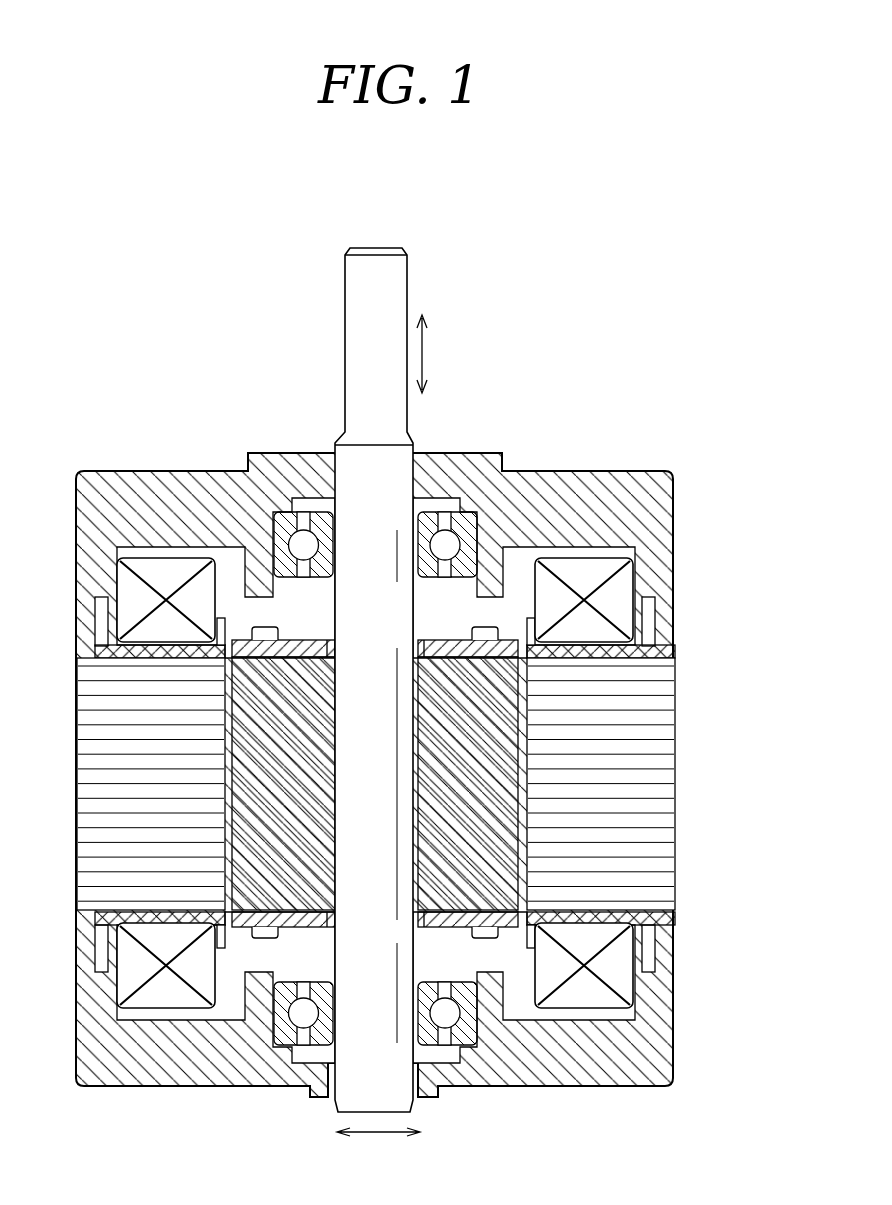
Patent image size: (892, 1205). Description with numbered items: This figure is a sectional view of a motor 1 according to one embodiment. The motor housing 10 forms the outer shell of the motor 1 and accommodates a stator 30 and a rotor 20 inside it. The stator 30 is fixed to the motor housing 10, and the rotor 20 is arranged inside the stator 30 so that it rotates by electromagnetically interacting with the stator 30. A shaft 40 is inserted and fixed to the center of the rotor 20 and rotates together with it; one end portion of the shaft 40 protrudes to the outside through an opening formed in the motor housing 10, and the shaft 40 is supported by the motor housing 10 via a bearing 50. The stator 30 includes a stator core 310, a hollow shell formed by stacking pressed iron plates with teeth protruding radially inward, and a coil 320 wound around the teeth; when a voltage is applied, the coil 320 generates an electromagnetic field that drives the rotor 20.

The motor 1 is at (248, 223).
The motor housing 10 is at (656, 518).
The rotor 20 is at (490, 700).
The stator 30 is at (439, 783).
The stator core 310 is at (623, 730).
The coil 320 is at (745, 753).
The shaft 40 is at (398, 279).
The bearing 50 is at (300, 1018).